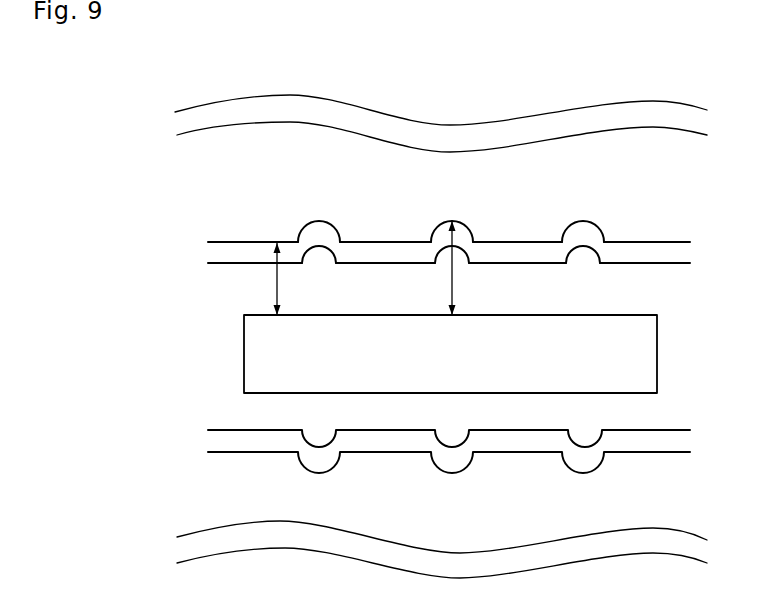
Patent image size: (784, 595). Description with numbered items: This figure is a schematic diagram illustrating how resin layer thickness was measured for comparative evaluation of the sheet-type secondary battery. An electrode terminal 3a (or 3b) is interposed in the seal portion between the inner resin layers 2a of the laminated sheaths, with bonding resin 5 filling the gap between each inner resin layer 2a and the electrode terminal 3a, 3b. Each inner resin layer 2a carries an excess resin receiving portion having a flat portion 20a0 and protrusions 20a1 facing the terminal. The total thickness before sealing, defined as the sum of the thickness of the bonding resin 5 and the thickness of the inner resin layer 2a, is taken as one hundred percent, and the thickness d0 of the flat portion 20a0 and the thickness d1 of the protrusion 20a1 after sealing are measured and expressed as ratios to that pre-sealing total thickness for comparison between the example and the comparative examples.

The inner resin layer 2a is at (652, 252).
The flat portion 20a0 is at (245, 242).
The protrusion 20a1 is at (582, 220).
The electrode terminal 3a is at (450, 354).
The electrode terminal 3b is at (450, 354).
The bonding resin 5 is at (410, 297).
The thickness of flat portion d0 is at (288, 279).
The thickness of protrusion d1 is at (463, 268).